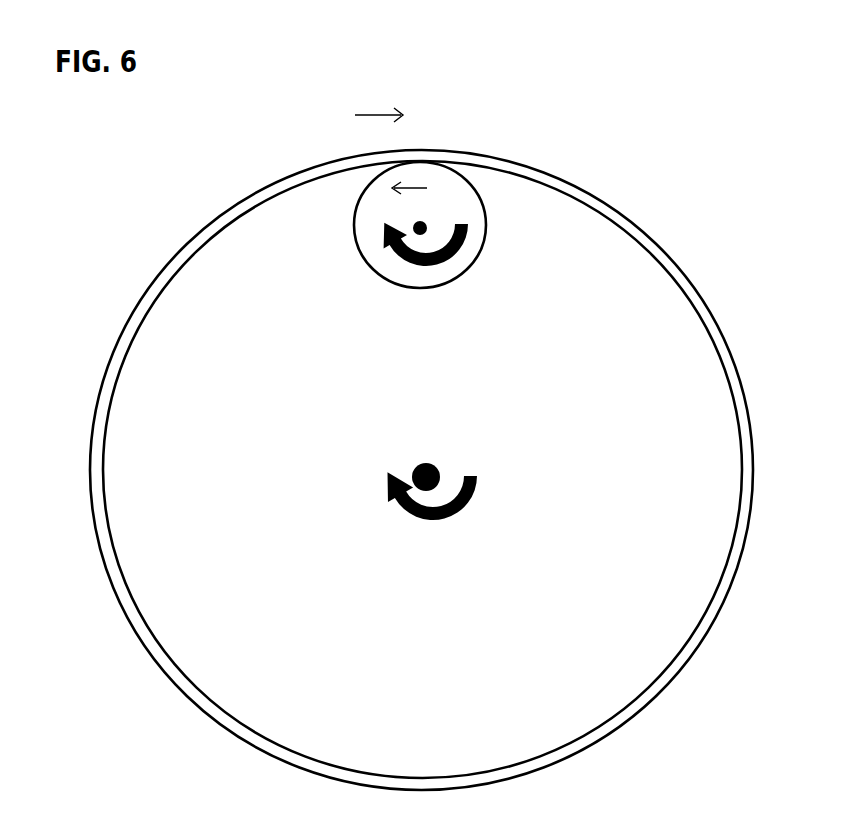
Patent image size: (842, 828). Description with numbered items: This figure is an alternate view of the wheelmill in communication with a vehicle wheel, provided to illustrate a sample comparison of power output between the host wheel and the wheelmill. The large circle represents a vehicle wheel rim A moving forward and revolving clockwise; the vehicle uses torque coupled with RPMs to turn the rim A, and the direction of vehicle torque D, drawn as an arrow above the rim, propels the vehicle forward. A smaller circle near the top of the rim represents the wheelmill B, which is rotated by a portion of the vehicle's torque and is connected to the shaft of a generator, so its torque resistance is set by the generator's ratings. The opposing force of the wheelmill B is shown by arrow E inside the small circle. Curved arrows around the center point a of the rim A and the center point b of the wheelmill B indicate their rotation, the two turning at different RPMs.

The vehicle wheel rim A is at (766, 472).
The wheelmill B is at (496, 231).
The direction of vehicle torque D is at (368, 117).
The opposing force of the wheelmill E is at (418, 189).
The axis of rotation of outer shell a is at (433, 489).
The axis of rotation of inner roller b is at (426, 239).